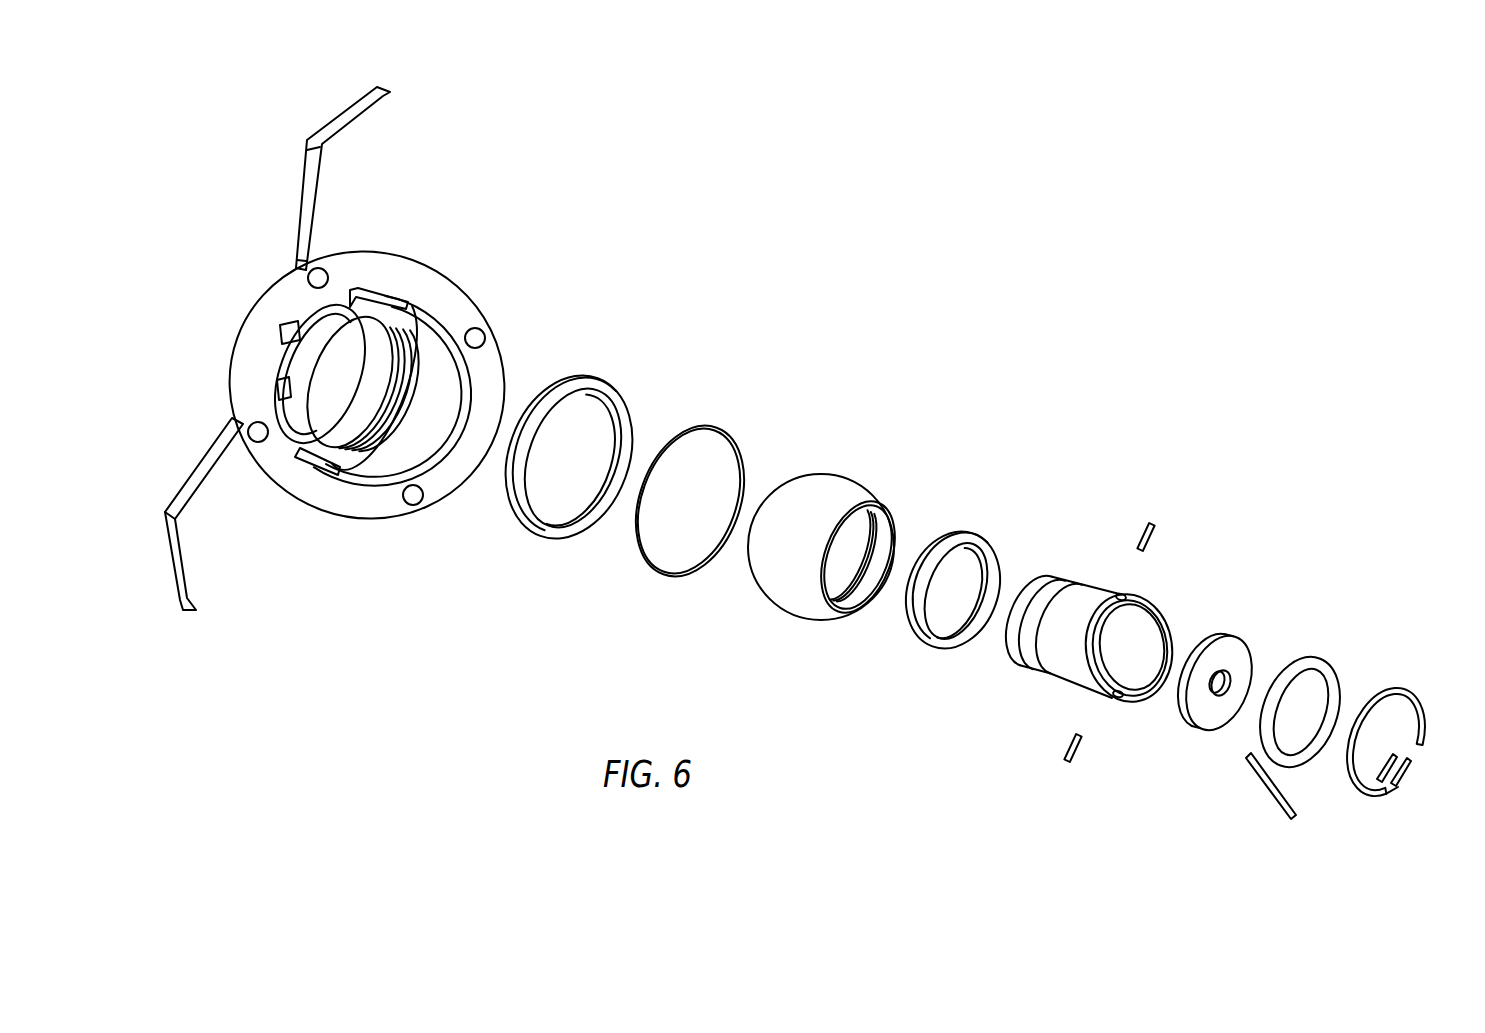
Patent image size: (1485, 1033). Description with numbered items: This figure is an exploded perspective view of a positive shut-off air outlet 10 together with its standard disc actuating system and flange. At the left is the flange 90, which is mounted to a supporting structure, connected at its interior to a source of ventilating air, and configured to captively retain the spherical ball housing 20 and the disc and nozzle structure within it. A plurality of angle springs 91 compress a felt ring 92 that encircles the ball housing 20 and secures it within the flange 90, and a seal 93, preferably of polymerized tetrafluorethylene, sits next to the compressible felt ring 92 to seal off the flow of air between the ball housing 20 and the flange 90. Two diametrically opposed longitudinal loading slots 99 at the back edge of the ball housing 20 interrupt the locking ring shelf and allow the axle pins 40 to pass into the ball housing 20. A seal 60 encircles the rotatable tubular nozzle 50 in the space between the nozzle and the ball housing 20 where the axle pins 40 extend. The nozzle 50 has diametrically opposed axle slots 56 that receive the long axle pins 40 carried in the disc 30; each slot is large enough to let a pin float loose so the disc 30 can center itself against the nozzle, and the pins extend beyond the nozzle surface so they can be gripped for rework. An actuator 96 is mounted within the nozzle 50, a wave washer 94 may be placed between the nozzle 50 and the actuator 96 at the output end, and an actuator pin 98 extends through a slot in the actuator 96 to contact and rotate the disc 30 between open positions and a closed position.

The positive shut-off air outlet 10 is at (866, 339).
The spherical ball housing 20 is at (851, 560).
The disc 30 is at (1222, 638).
The axle pins 40 is at (1148, 532).
The rotatable tubular nozzle 50 is at (1082, 582).
The axle slots 56 is at (1121, 594).
The seal 60 is at (969, 532).
The flange 90 is at (358, 517).
The angle springs 91 is at (178, 498).
The felt ring 92 is at (565, 374).
The seal 93 is at (703, 425).
The wave washer 94 is at (1323, 656).
The actuator 96 is at (1410, 693).
The actuator pin 98 is at (1261, 778).
The longitudinal loading slots 99 is at (880, 506).